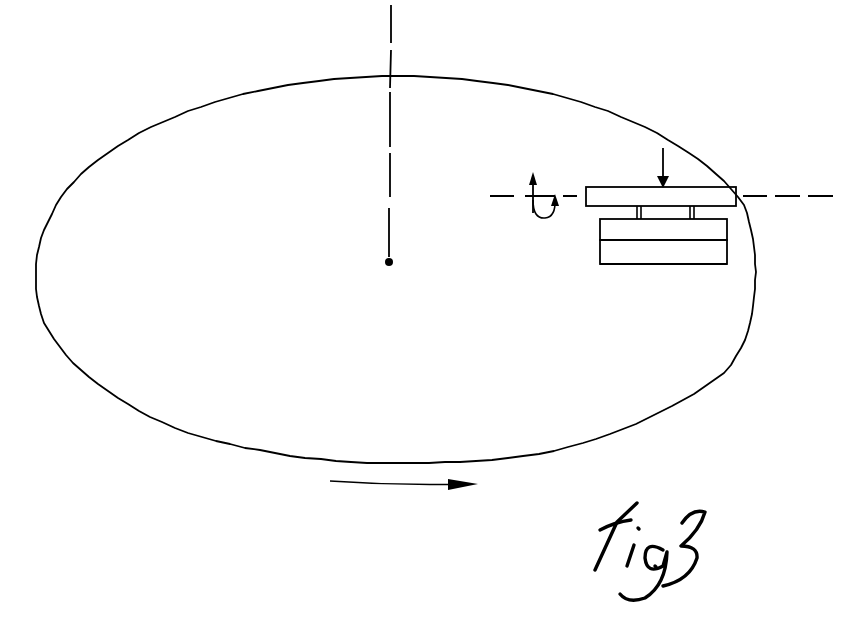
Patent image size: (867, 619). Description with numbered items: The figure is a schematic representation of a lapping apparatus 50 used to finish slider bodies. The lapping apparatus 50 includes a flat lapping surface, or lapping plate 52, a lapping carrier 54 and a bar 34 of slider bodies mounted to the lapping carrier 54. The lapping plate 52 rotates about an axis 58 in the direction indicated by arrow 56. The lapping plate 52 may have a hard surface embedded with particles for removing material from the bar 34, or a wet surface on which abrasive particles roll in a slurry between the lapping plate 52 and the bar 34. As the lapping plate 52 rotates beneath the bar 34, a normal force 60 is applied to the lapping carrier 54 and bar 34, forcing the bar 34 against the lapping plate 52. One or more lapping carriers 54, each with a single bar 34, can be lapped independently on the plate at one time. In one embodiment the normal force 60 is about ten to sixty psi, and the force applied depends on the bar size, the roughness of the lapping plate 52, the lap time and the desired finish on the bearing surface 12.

The bearing surface 12 is at (658, 265).
The bar 34 is at (727, 252).
The lapping apparatus 50 is at (92, 104).
The lapping plate 52 is at (547, 92).
The lapping carrier 54 is at (727, 230).
The arrow 56 is at (400, 487).
The axis 58 is at (393, 25).
The normal force 60 is at (665, 158).